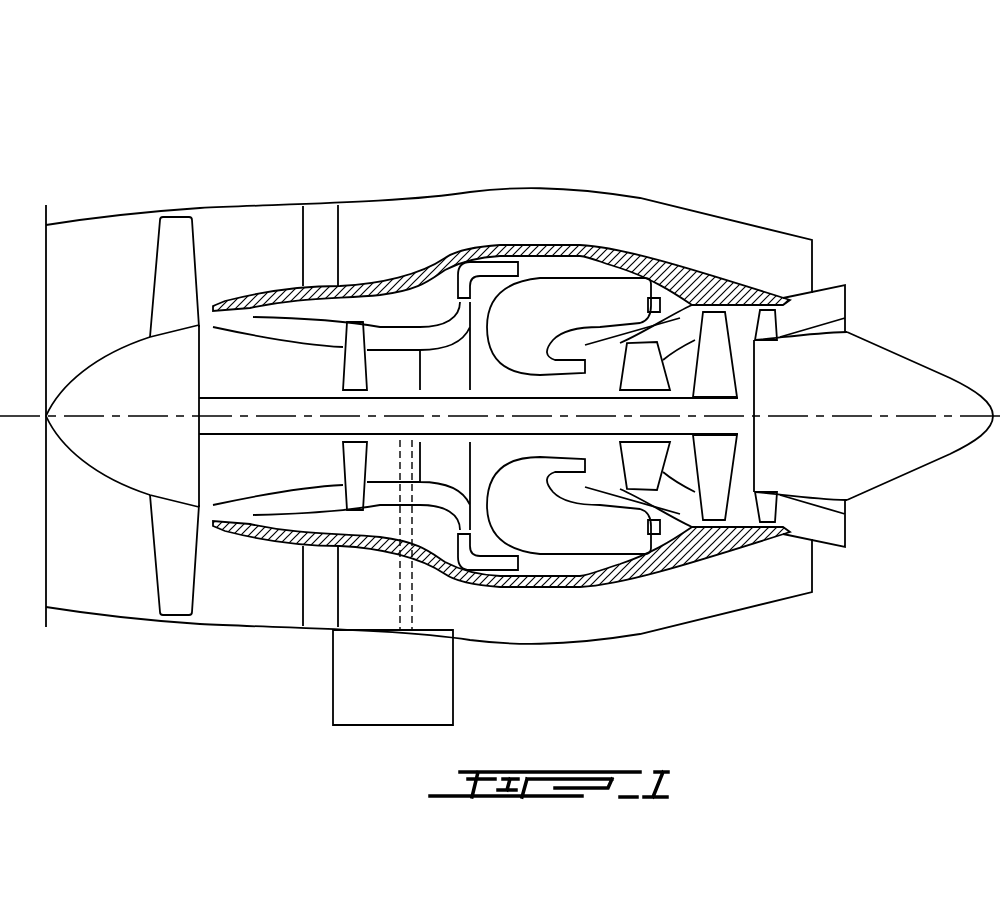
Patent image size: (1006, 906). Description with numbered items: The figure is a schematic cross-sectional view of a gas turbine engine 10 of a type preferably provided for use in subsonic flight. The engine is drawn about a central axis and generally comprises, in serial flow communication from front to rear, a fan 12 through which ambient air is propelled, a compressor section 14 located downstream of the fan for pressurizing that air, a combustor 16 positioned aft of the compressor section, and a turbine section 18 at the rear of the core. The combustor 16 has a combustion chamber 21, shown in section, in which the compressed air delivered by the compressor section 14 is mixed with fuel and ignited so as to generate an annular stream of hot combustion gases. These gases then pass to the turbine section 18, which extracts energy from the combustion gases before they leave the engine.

The gas turbine engine 10 is at (693, 152).
The fan 12 is at (172, 545).
The compressor section 14 is at (404, 342).
The combustor 16 is at (569, 297).
The turbine section 18 is at (680, 472).
The combustion chamber 21 is at (563, 540).